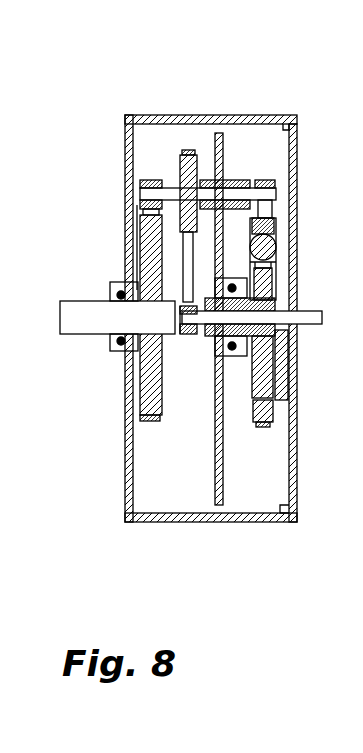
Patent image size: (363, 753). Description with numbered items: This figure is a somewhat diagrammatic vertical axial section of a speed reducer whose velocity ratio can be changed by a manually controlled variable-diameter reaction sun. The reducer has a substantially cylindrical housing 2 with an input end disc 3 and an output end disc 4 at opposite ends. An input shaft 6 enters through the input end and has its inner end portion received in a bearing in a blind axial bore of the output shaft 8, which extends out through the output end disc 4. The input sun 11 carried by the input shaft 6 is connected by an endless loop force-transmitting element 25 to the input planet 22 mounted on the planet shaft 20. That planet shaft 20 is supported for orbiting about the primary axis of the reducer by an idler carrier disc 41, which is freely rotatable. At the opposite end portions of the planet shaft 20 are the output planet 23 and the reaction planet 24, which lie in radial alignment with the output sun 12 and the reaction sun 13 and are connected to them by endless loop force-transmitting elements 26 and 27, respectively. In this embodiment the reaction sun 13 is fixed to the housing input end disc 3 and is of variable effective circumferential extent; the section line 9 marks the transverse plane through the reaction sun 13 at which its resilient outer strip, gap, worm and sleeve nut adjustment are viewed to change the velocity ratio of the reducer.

The housing 2 is at (198, 104).
The input end disc 3 is at (297, 160).
The output end disc 4 is at (125, 150).
The input shaft 6 is at (305, 318).
The output shaft 8 is at (78, 332).
The section line (FIG. 9) 9 is at (283, 112).
The input sun 11 is at (185, 342).
The output sun 12 is at (150, 408).
The reaction sun 13 is at (272, 386).
The planet shaft 20 is at (280, 196).
The input planet 22 is at (185, 168).
The output planet 23 is at (145, 209).
The reaction planet 24 is at (272, 205).
The endless loop force-transmitting element 25 is at (187, 262).
The endless loop force-transmitting element 26 is at (145, 212).
The endless loop force-transmitting element 27 is at (280, 235).
The idler carrier disc 41 is at (225, 462).